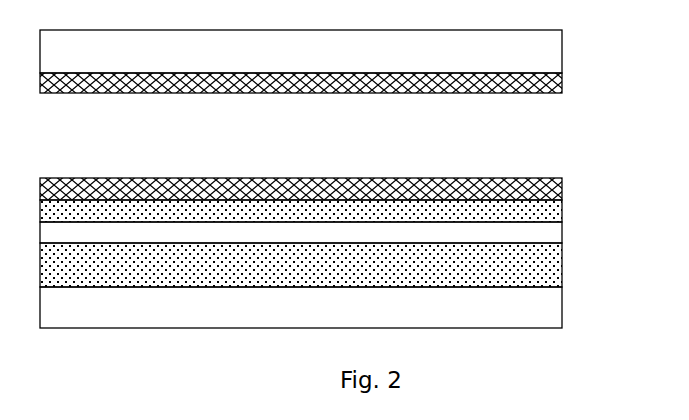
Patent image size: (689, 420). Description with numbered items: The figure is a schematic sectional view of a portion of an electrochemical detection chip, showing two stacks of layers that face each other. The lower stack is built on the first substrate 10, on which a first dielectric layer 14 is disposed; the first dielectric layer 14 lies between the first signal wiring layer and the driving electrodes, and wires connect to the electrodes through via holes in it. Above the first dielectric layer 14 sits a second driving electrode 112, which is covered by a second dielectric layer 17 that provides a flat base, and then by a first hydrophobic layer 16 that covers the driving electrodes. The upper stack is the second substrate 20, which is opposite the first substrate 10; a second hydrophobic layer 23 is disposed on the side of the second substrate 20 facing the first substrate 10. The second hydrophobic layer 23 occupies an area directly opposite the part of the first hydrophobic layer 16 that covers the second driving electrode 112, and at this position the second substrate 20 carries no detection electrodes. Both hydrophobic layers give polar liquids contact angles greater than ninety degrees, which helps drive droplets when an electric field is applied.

The first substrate 10 is at (530, 308).
The first dielectric layer 14 is at (530, 264).
The second driving electrode 112 is at (530, 233).
The second dielectric layer 17 is at (530, 210).
The first hydrophobic layer 16 is at (530, 190).
The second substrate 20 is at (530, 52).
The second hydrophobic layer 23 is at (530, 82).